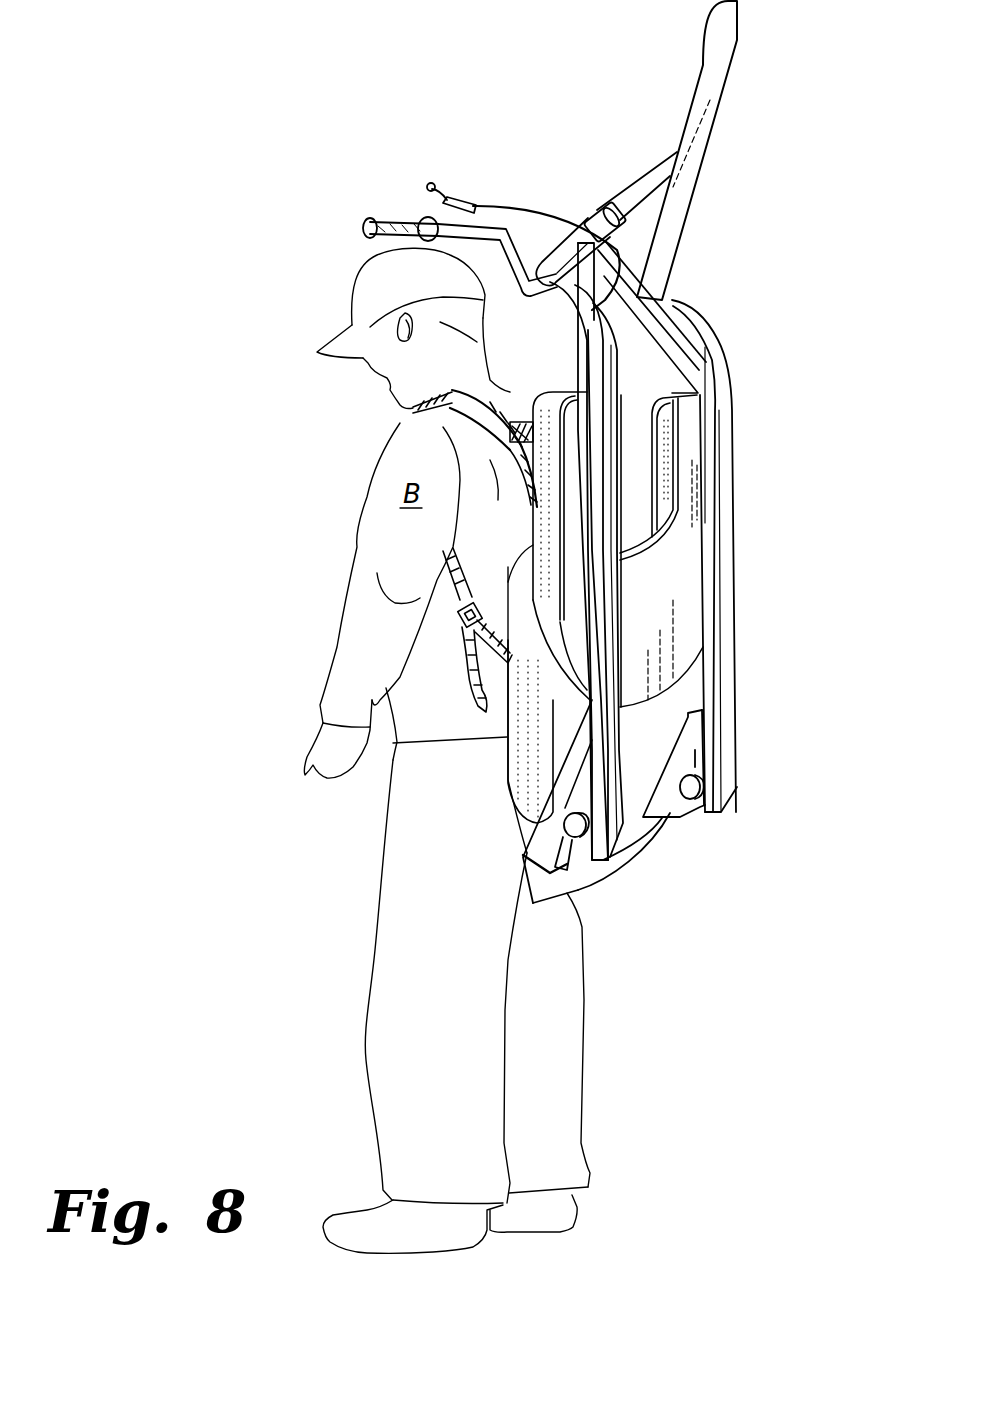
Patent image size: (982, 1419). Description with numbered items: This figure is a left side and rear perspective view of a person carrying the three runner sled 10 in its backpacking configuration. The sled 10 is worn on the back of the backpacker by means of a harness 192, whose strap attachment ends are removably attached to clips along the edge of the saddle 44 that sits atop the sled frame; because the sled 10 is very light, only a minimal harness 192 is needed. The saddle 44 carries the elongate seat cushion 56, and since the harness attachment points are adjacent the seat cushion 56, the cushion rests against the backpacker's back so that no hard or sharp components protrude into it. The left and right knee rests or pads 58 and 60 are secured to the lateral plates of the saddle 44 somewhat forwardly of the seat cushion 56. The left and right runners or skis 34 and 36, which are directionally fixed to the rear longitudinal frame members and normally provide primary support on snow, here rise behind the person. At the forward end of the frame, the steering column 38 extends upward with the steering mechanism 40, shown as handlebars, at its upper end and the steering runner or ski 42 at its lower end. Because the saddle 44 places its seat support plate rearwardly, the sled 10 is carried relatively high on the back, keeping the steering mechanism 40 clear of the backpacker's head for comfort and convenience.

The three runner sled 10 is at (730, 860).
The left runner or ski 34 is at (733, 563).
The right runner or ski 36 is at (618, 613).
The steering column 38 is at (607, 205).
The steering mechanism 40 is at (503, 228).
The steering runner or ski 42 is at (730, 80).
The saddle 44 is at (667, 698).
The seat cushion 56 is at (508, 778).
The left knee rest or pad 58 is at (668, 400).
The right knee rest or pad 60 is at (547, 394).
The harness 192 is at (468, 606).